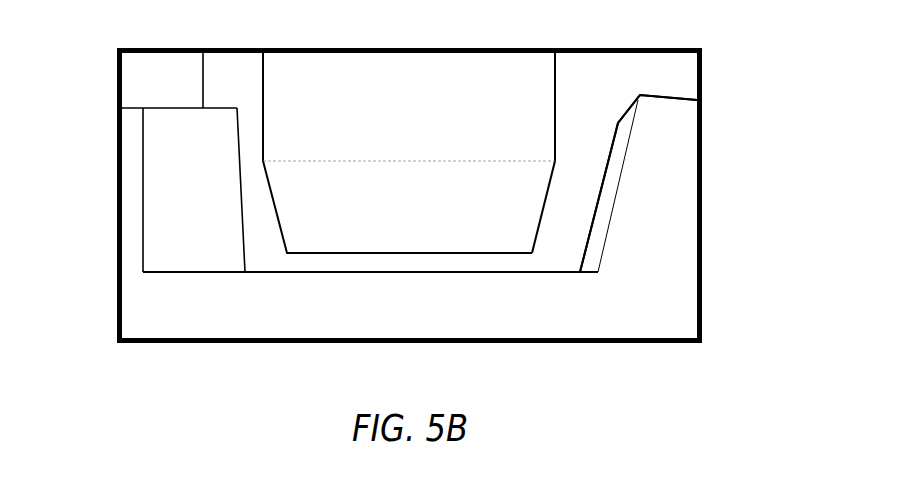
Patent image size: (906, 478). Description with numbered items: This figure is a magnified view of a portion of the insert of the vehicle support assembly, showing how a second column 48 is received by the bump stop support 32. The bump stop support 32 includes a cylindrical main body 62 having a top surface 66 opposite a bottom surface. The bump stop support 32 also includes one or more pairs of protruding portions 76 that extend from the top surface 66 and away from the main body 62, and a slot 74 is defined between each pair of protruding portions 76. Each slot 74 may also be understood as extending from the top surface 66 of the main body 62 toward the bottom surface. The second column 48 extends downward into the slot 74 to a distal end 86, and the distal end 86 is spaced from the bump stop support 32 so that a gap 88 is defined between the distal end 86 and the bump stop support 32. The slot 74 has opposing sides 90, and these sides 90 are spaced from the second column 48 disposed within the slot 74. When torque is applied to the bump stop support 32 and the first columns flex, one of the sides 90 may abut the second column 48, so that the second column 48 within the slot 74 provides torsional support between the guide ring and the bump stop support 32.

The bump stop support 32 is at (242, 318).
The main body 62 is at (367, 318).
The top surface 66 is at (368, 272).
The second column 48 is at (537, 75).
The gap 88 is at (422, 262).
The distal end 86 is at (487, 257).
The protruding portions 76 is at (158, 175).
The opposing sides 90 is at (177, 130).
The slot 74 is at (585, 122).